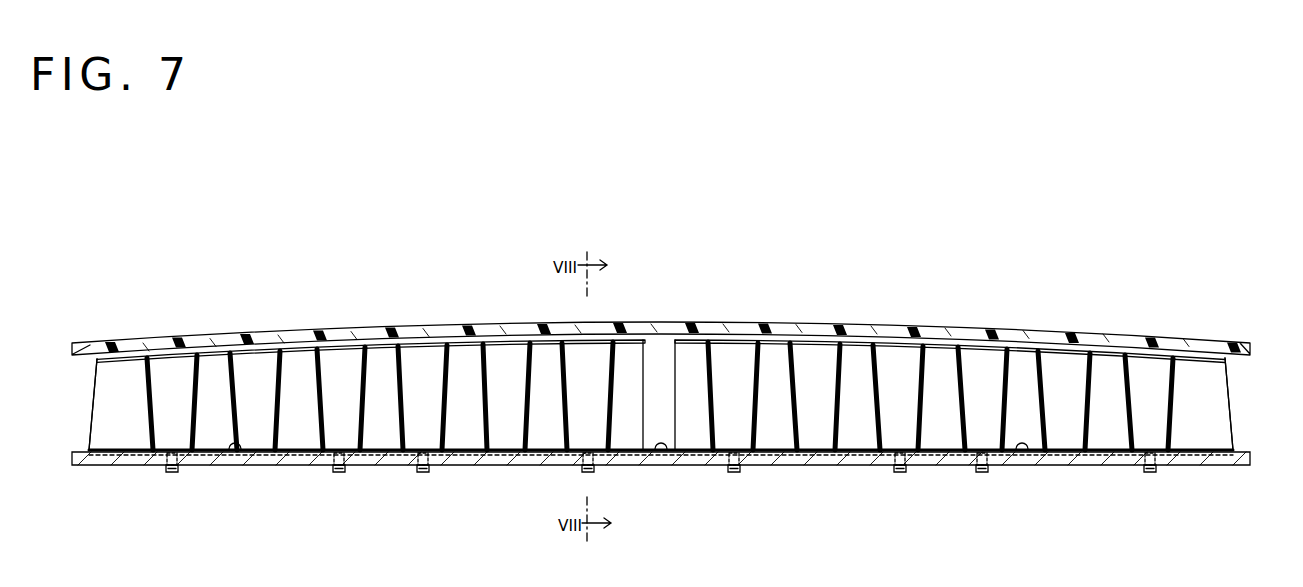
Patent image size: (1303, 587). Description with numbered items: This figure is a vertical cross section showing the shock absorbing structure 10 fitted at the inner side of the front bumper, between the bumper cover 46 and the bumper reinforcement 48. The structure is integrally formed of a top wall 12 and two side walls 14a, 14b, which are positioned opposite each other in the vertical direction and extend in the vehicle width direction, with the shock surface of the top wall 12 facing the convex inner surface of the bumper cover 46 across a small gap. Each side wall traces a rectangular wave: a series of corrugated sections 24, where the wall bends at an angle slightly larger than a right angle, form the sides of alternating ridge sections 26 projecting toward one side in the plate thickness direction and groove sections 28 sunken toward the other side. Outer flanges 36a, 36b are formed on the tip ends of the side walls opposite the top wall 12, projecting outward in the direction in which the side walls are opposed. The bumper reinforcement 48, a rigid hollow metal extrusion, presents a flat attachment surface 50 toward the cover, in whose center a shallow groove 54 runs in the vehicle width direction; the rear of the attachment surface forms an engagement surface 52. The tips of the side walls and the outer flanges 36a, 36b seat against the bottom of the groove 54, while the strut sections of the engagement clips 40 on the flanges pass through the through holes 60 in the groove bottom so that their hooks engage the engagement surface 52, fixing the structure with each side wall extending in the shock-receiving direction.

The shock absorbing structure 10 is at (88, 412).
The top wall 12 is at (425, 338).
The side wall 14a is at (1202, 428).
The side wall 14b is at (118, 433).
The corrugated section 24 is at (152, 387).
The ridge section 26 is at (117, 385).
The groove section 28 is at (253, 377).
The outer flange 36a is at (1025, 449).
The outer flange 36b is at (238, 449).
The engagement clip 40 is at (172, 474).
The bumper cover 46 is at (1045, 331).
The bumper reinforcement 48 is at (127, 460).
The attachment surface 50 is at (661, 449).
The engagement surface 52 is at (793, 466).
The groove 54 is at (498, 443).
The through hole 60 is at (167, 474).